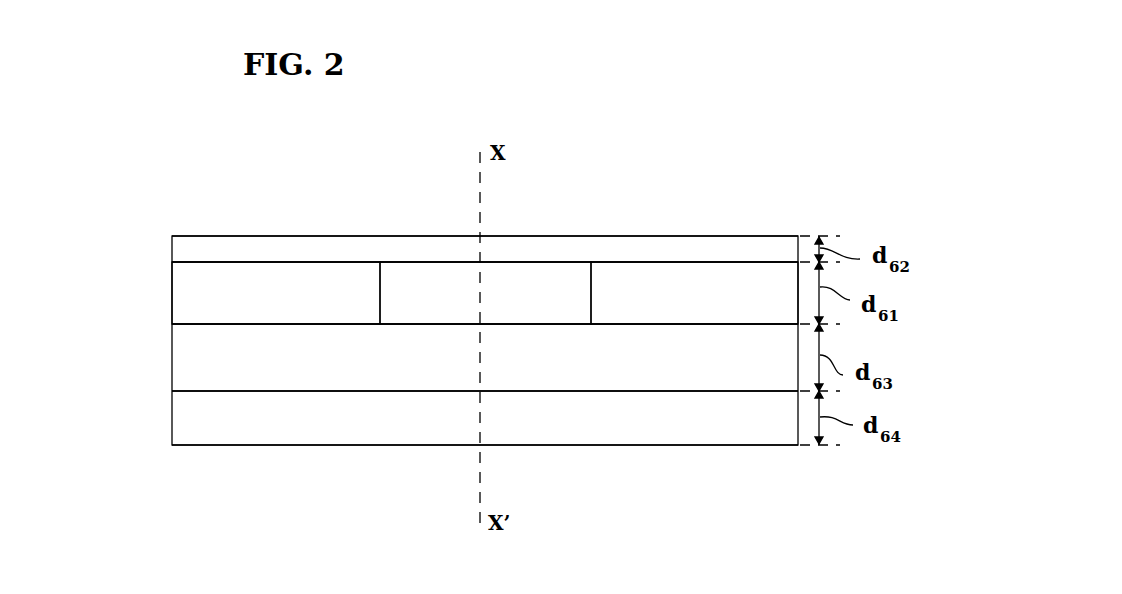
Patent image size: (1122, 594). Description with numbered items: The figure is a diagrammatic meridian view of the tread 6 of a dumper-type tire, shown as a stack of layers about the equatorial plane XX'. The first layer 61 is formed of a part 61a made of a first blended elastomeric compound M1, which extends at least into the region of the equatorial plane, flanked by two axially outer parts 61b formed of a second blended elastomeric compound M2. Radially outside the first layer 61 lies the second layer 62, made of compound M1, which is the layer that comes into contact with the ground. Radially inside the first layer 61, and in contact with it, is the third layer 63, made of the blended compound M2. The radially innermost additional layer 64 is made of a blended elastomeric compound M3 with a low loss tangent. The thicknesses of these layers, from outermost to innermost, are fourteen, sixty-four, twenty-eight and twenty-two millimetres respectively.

The tread 6 is at (674, 146).
The first layer 61 is at (162, 297).
The part 61a is at (427, 277).
The axially outer parts 61b is at (250, 287).
The second layer 62 is at (523, 245).
The third layer 63 is at (187, 358).
The additional layer 64 is at (323, 433).